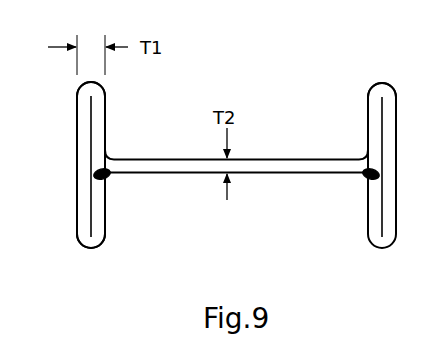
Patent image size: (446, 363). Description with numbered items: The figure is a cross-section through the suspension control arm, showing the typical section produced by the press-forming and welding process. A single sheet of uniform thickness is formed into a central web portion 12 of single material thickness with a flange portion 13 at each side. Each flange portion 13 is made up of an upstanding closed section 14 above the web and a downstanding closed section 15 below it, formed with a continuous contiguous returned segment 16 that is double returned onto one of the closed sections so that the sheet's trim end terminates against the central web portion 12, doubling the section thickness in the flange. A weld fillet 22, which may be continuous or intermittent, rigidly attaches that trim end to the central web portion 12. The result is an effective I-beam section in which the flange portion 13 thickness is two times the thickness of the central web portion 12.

The web portion 12 is at (281, 169).
The flange portion 13 is at (109, 98).
The upstanding closed section 14 is at (379, 83).
The downstanding closed section 15 is at (85, 249).
The returned segment 16 is at (82, 200).
The weld fillet 22 is at (110, 176).